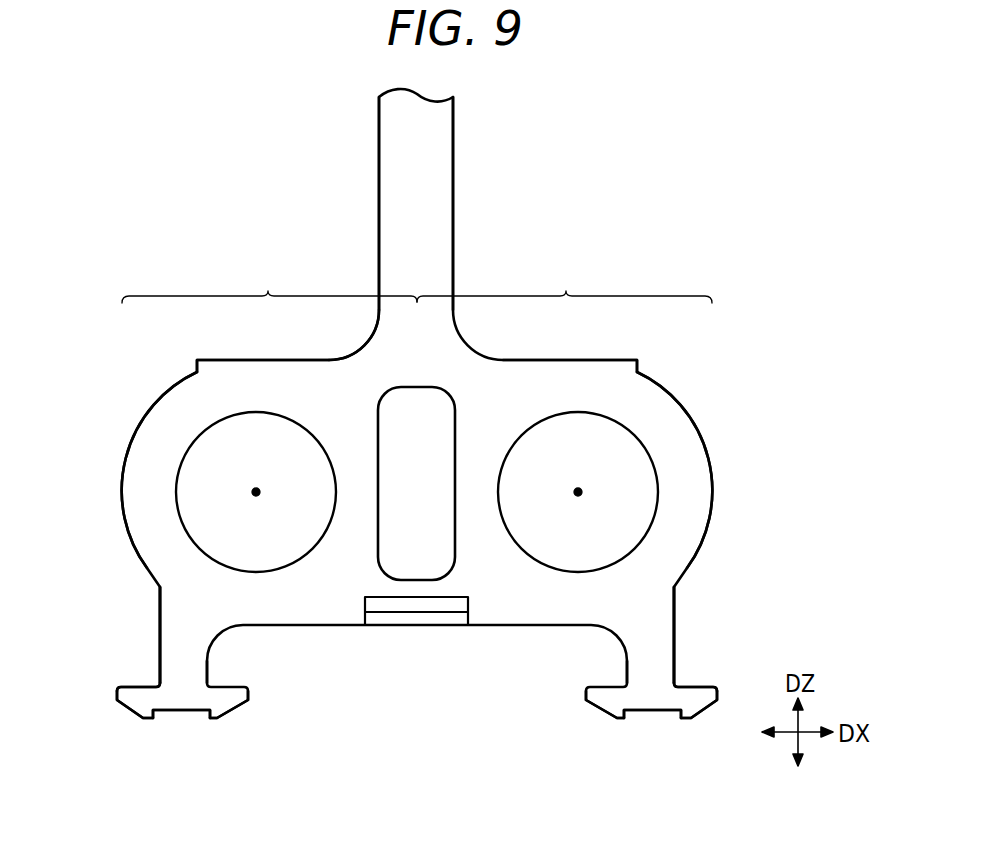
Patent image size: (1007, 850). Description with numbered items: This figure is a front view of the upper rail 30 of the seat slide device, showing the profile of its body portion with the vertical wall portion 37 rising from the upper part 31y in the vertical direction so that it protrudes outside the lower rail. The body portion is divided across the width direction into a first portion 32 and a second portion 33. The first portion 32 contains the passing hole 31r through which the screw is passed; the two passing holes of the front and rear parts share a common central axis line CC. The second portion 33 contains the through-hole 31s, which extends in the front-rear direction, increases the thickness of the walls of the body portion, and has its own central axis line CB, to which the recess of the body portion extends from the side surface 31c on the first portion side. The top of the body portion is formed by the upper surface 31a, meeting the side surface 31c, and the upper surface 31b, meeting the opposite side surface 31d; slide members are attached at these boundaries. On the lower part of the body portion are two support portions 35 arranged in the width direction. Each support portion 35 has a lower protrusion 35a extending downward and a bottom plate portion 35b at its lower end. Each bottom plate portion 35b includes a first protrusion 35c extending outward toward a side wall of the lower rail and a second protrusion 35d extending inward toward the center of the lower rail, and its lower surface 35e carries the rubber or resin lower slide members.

The upper rail 30 is at (678, 166).
The vertical wall portion 37 is at (453, 148).
The second portion 33 is at (269, 283).
The first portion 32 is at (564, 283).
The upper surface 31a is at (560, 356).
The upper surface 31b is at (252, 356).
The side surface 31c is at (712, 482).
The side surface 31d is at (122, 478).
The upper part 31y is at (303, 368).
The through-hole 31s is at (254, 412).
The passing hole 31r is at (576, 412).
The support portion 35 is at (139, 644).
The lower protrusion 35a is at (158, 628).
The bottom plate portion 35b is at (152, 690).
The first protrusion 35c is at (133, 713).
The second protrusion 35d is at (233, 714).
The lower surface 35e is at (183, 712).
The central axis line CB is at (256, 497).
The central axis line CC is at (578, 497).